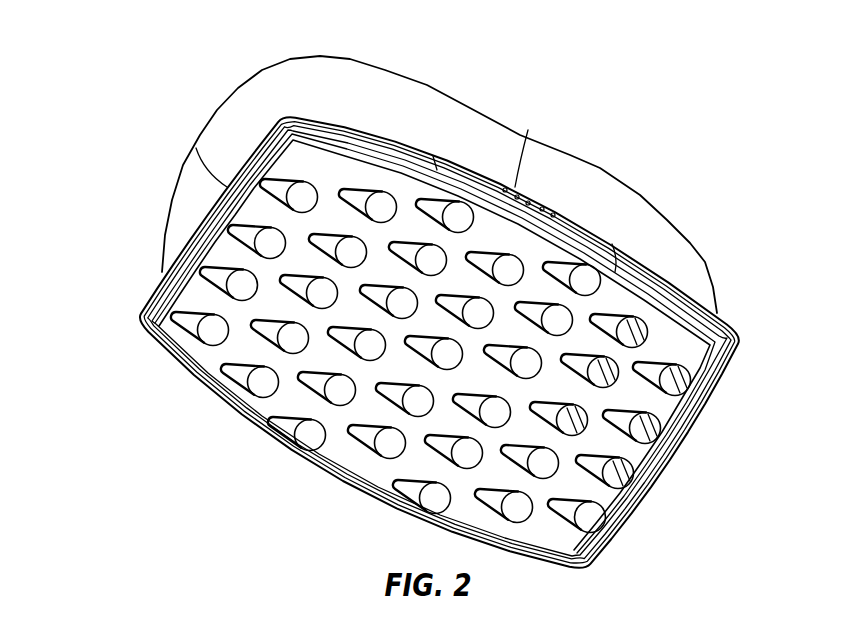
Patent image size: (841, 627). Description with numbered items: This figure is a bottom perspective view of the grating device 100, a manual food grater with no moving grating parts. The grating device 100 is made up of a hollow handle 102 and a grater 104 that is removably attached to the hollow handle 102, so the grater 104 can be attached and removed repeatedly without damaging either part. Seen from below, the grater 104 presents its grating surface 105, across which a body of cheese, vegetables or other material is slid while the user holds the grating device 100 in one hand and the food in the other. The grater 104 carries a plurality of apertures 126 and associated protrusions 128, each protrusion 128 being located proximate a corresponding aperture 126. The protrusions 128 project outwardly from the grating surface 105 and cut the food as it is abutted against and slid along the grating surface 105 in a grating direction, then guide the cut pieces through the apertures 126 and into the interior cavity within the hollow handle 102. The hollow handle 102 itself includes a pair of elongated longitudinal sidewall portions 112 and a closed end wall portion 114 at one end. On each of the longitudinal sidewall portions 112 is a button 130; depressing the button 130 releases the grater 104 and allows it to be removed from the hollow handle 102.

The grating device 100 is at (117, 186).
The hollow handle 102 is at (500, 120).
The grater 104 is at (411, 190).
The grating surface 105 is at (380, 356).
The longitudinal sidewall portions 112 is at (648, 227).
The closed end wall portion 114 is at (193, 181).
The apertures 126 is at (210, 327).
The protrusions 128 is at (280, 187).
The button 130 is at (563, 220).